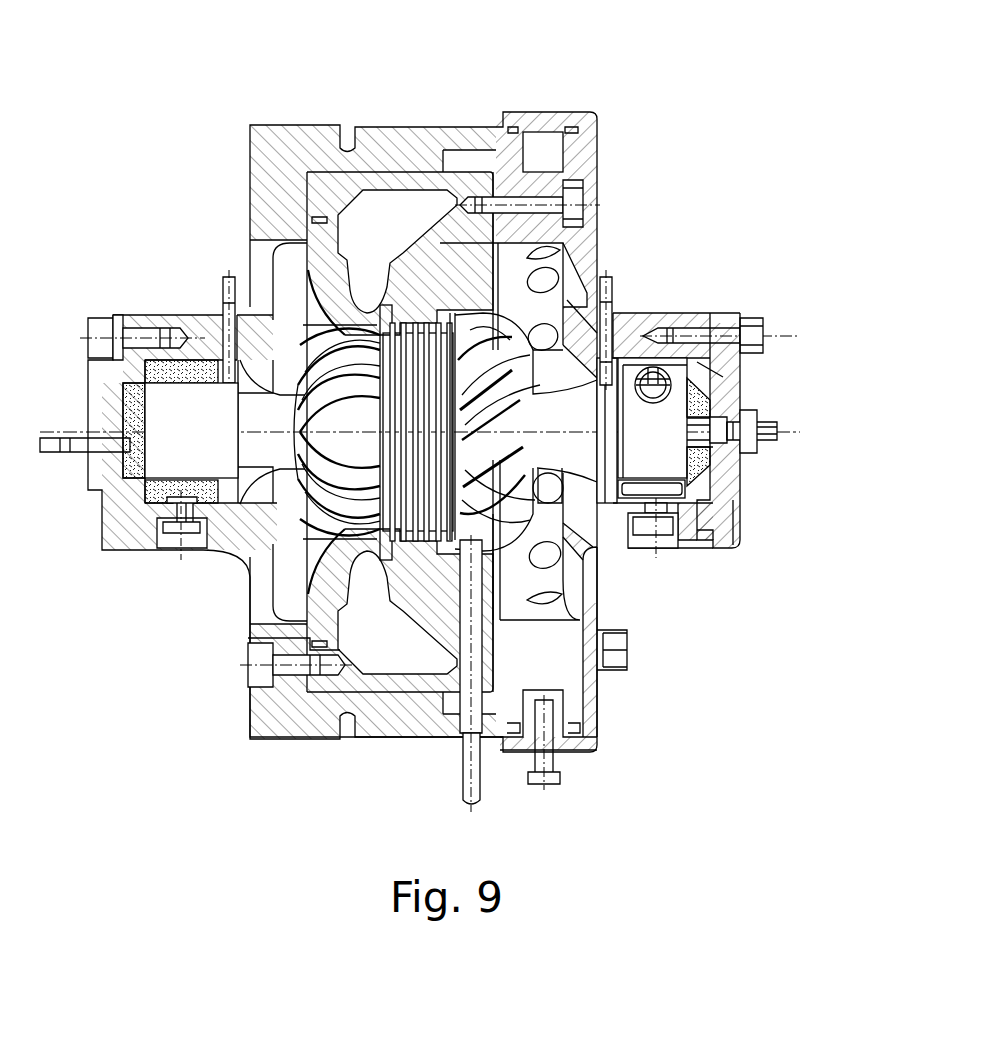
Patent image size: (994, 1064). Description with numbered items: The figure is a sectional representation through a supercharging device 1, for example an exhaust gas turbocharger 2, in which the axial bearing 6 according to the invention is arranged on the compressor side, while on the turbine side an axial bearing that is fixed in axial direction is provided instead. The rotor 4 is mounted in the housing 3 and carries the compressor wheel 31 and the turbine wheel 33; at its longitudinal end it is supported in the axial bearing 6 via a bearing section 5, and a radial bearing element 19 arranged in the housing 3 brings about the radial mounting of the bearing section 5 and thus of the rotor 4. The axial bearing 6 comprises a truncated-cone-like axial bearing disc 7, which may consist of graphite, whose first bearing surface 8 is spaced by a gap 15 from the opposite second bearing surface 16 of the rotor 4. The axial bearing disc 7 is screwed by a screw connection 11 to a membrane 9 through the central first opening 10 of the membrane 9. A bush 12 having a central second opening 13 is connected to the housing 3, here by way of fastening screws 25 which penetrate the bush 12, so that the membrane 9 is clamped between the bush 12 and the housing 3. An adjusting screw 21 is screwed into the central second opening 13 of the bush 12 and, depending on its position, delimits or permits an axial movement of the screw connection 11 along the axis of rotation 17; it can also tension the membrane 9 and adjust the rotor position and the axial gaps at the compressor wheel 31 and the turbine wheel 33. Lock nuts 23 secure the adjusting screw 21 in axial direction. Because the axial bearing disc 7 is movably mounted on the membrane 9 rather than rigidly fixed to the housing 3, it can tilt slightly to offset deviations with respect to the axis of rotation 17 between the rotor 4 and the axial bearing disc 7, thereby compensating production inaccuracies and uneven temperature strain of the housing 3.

The supercharging device 1 is at (571, 82).
The exhaust gas turbocharger 2 is at (533, 431).
The housing 3 is at (242, 537).
The rotor 4 is at (578, 460).
The bearing section 5 is at (605, 460).
The axial bearing 6 is at (717, 322).
The axial bearing disc 7 is at (723, 410).
The first bearing surface 8 is at (675, 547).
The membrane 9 is at (743, 535).
The central first opening 10 is at (733, 423).
The screw connection 11 is at (723, 537).
The bush 12 is at (735, 532).
The central second opening 13 is at (770, 428).
The gap 15 is at (697, 337).
The second bearing surface 16 is at (713, 393).
The axis of rotation 17 is at (187, 430).
The radial bearing element 19 is at (622, 358).
The adjusting screw 21 is at (770, 437).
The lock nut 23 is at (757, 450).
The fastening screw 25 is at (760, 320).
The compressor wheel 31 is at (497, 503).
The turbine wheel 33 is at (305, 487).